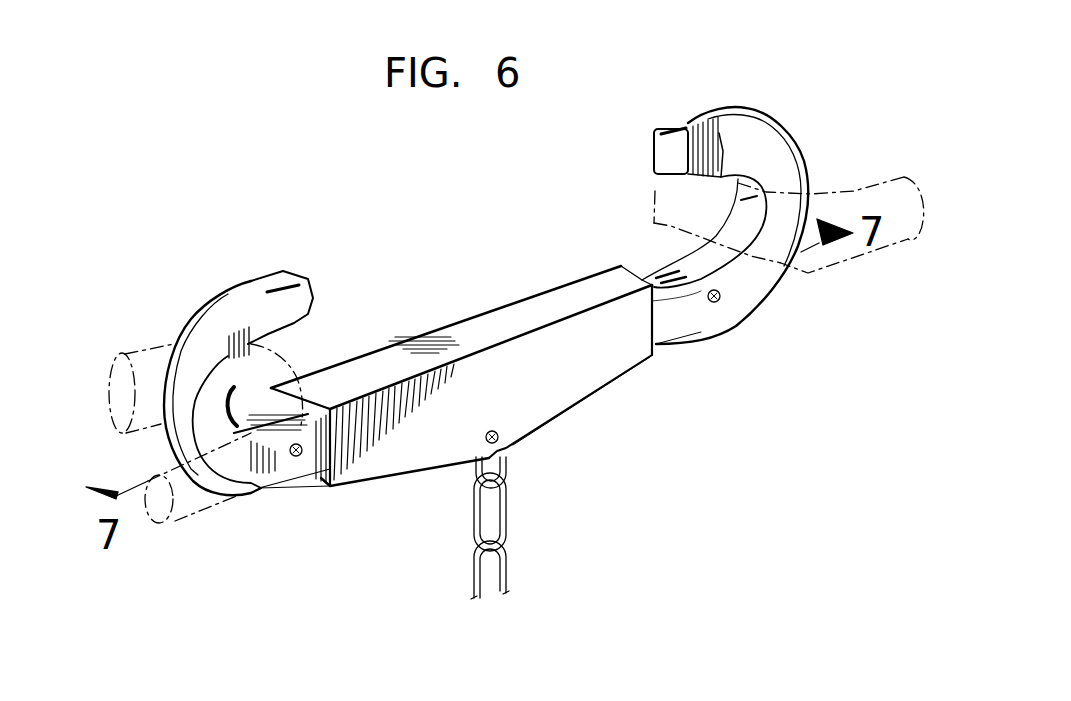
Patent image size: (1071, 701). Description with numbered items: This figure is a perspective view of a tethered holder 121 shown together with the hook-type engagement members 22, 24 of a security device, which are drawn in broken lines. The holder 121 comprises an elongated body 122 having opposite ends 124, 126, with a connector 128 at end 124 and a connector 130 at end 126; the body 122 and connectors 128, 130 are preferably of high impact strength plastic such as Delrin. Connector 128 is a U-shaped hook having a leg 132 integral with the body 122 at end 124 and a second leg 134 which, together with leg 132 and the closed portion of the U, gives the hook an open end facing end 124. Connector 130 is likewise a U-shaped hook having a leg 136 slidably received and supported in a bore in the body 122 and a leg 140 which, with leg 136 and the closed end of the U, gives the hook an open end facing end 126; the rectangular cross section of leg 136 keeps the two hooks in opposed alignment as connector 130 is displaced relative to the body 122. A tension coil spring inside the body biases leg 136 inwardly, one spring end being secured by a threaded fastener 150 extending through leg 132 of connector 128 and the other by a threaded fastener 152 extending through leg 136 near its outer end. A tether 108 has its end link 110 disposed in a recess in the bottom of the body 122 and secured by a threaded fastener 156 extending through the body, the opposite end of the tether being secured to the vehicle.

The holder 121 is at (486, 188).
The body 122 is at (463, 315).
The end 124 is at (352, 481).
The end 126 is at (642, 359).
The connector 128 is at (204, 286).
The connector 130 is at (776, 95).
The leg 132 is at (247, 476).
The second leg 134 is at (268, 280).
The leg 136 is at (685, 317).
The leg 140 is at (693, 121).
The threaded fastener 150 is at (293, 457).
The threaded fastener 152 is at (720, 298).
The threaded fastener 156 is at (486, 441).
The tether 108 is at (520, 518).
The end link 110 is at (507, 462).
The hook-type engagement member 22 is at (852, 192).
The hook-type engagement member 24 is at (127, 353).